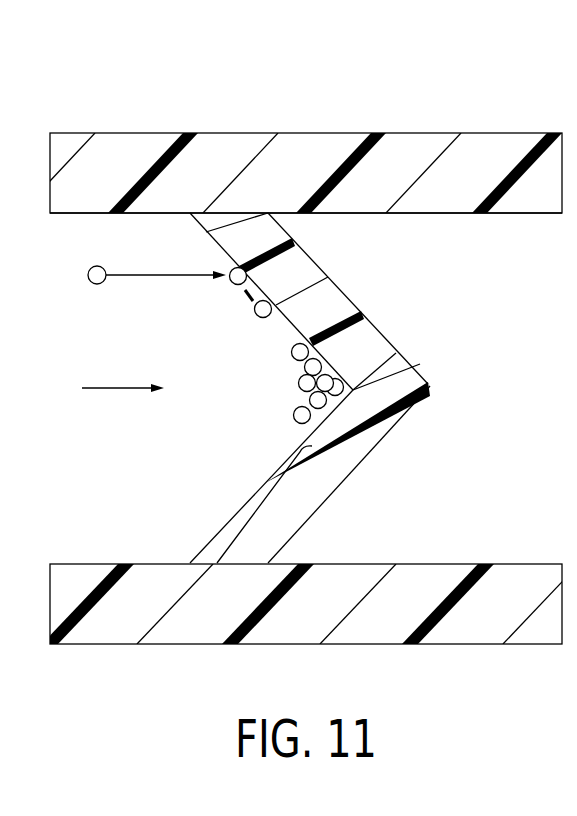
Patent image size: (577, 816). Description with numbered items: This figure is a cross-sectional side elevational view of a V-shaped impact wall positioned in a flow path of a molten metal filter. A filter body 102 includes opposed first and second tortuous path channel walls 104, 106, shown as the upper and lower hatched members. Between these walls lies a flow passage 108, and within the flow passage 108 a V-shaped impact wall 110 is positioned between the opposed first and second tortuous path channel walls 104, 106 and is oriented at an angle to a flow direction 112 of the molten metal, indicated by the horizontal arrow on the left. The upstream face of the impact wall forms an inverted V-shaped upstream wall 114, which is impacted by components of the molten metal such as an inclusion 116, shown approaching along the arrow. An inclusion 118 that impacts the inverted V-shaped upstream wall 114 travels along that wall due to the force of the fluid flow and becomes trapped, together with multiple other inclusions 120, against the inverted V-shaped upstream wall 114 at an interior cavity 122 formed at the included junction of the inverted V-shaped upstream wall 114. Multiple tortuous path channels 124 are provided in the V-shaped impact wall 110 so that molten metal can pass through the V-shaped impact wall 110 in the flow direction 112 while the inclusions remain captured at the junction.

The filter body 102 is at (434, 103).
The first tortuous path channel wall 104 is at (453, 200).
The second tortuous path channel wall 106 is at (448, 578).
The flow passage 108 is at (130, 221).
The V-shaped impact wall 110 is at (304, 388).
The flow direction 112 is at (122, 392).
The inverted V-shaped upstream wall 114 is at (195, 243).
The inclusion 116 is at (90, 284).
The inclusion 118 is at (242, 272).
The multiple other inclusions 120 is at (285, 347).
The interior cavity 122 is at (408, 369).
The tortuous path channels 124 is at (338, 447).